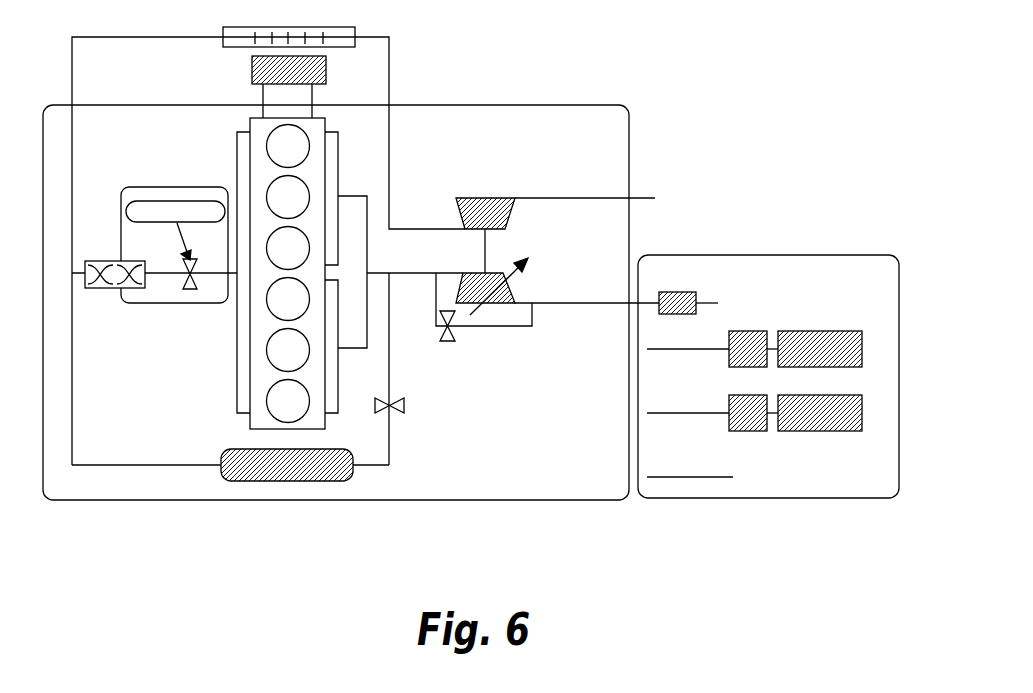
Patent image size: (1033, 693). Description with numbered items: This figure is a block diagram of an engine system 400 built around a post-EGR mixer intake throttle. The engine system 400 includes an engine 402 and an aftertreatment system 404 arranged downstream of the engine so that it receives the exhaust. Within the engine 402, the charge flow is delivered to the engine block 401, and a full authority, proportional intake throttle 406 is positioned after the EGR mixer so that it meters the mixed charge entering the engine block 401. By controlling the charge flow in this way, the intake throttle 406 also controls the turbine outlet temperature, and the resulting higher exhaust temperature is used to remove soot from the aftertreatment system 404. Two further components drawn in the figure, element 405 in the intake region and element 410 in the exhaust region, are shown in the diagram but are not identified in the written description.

The engine system 400 is at (405, 569).
The engine block 401 is at (248, 422).
The engine 402 is at (494, 104).
The aftertreatment system 404 is at (775, 498).
The heat exchanger 405 is at (95, 289).
The intake throttle 406 is at (187, 304).
The turbocharger 410 is at (567, 249).